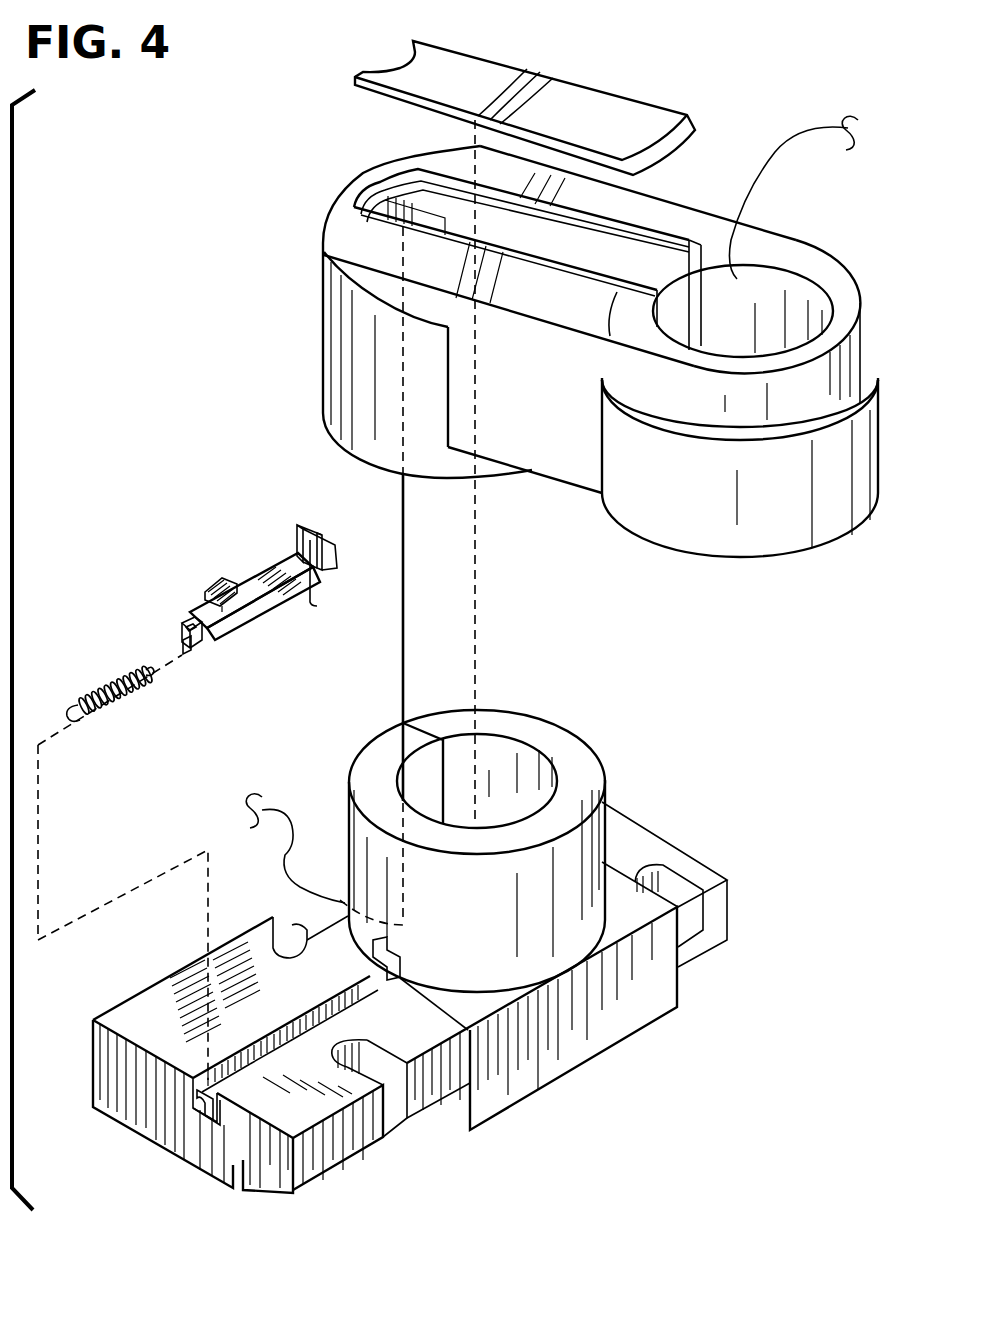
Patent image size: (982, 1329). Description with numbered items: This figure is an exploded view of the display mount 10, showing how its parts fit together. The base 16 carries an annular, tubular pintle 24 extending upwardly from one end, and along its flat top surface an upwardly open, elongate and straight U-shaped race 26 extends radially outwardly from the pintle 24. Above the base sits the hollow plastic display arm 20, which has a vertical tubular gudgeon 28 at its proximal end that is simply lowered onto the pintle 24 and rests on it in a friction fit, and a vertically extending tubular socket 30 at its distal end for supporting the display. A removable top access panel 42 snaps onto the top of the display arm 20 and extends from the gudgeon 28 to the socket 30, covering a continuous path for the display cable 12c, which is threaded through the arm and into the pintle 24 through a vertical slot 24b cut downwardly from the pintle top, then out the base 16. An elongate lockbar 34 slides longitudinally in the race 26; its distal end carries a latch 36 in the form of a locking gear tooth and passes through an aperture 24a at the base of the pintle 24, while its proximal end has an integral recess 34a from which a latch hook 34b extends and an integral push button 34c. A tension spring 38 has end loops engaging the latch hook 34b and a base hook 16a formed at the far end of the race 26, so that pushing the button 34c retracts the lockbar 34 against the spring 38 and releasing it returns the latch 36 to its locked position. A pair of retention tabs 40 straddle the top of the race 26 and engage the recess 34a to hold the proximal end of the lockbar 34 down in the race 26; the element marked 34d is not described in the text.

The display mount 10 is at (155, 215).
The display cable 12c is at (794, 133).
The base 16 is at (612, 1066).
The base hook 16a is at (206, 1105).
The display arm 20 is at (745, 569).
The pintle 24 is at (573, 757).
The aperture 24a is at (397, 953).
The vertical slot 24b is at (376, 752).
The race 26 is at (330, 1017).
The gudgeon 28 is at (322, 321).
The socket 30 is at (805, 262).
The lockbar 34 is at (262, 572).
The recess 34a is at (179, 626).
The latch hook 34b is at (190, 653).
The push button 34c is at (212, 580).
The upright tab 34d is at (330, 548).
The latch 36 is at (313, 598).
The spring 38 is at (101, 682).
The retention tabs 40 is at (268, 1058).
The top access panel 42 is at (473, 72).